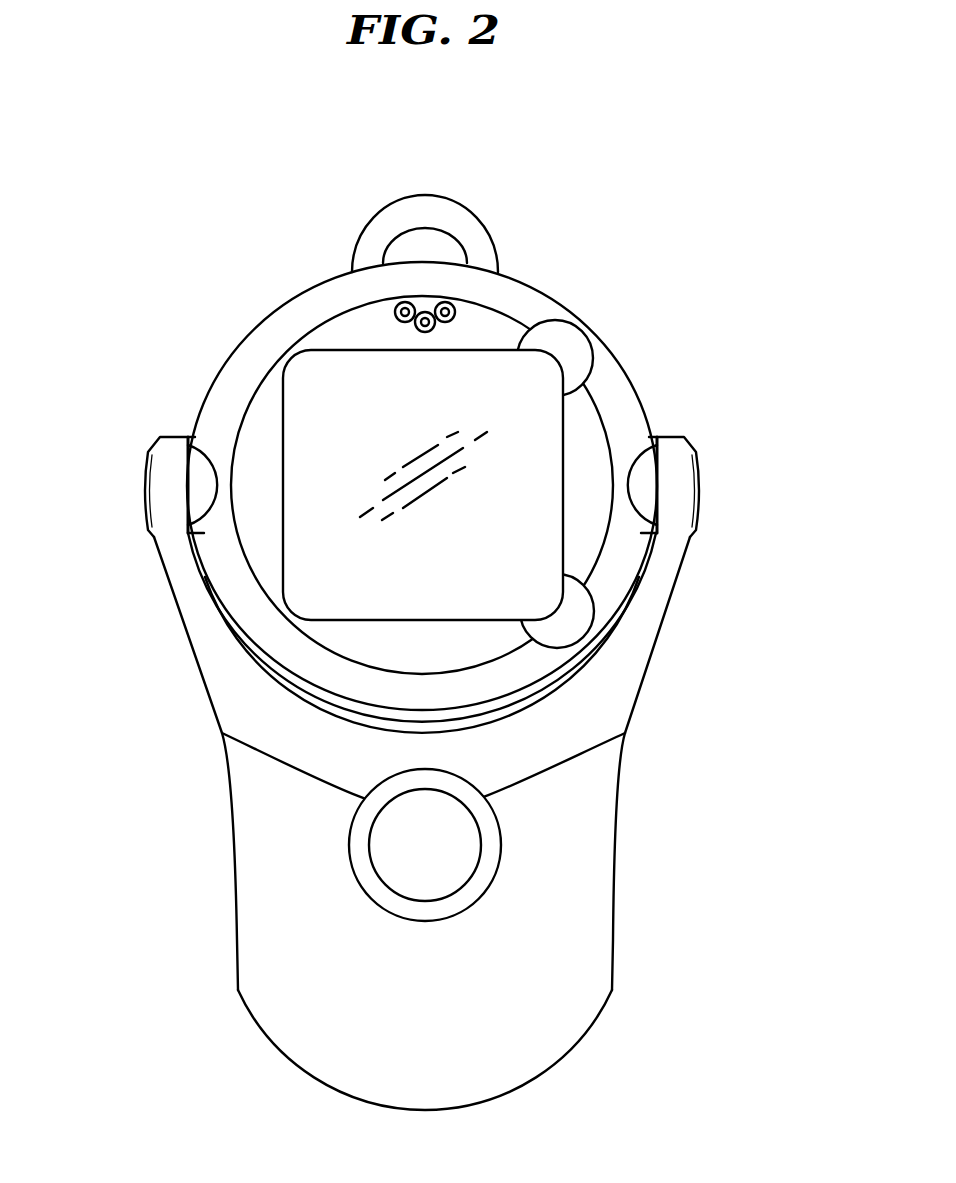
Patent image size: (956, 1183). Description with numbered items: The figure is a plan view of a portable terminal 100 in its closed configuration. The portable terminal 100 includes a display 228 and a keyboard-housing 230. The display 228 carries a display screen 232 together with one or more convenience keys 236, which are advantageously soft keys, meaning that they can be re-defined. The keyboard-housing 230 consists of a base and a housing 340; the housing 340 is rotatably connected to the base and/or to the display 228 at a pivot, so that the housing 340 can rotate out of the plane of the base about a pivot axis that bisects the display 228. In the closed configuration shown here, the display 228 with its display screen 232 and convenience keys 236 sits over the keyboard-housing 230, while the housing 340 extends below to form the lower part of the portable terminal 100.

The portable terminal 100 is at (740, 238).
The display 228 is at (273, 316).
The keyboard-housing 230 is at (131, 793).
The display screen 232 is at (302, 438).
The convenience keys 236 is at (570, 342).
The housing 340 is at (270, 1040).